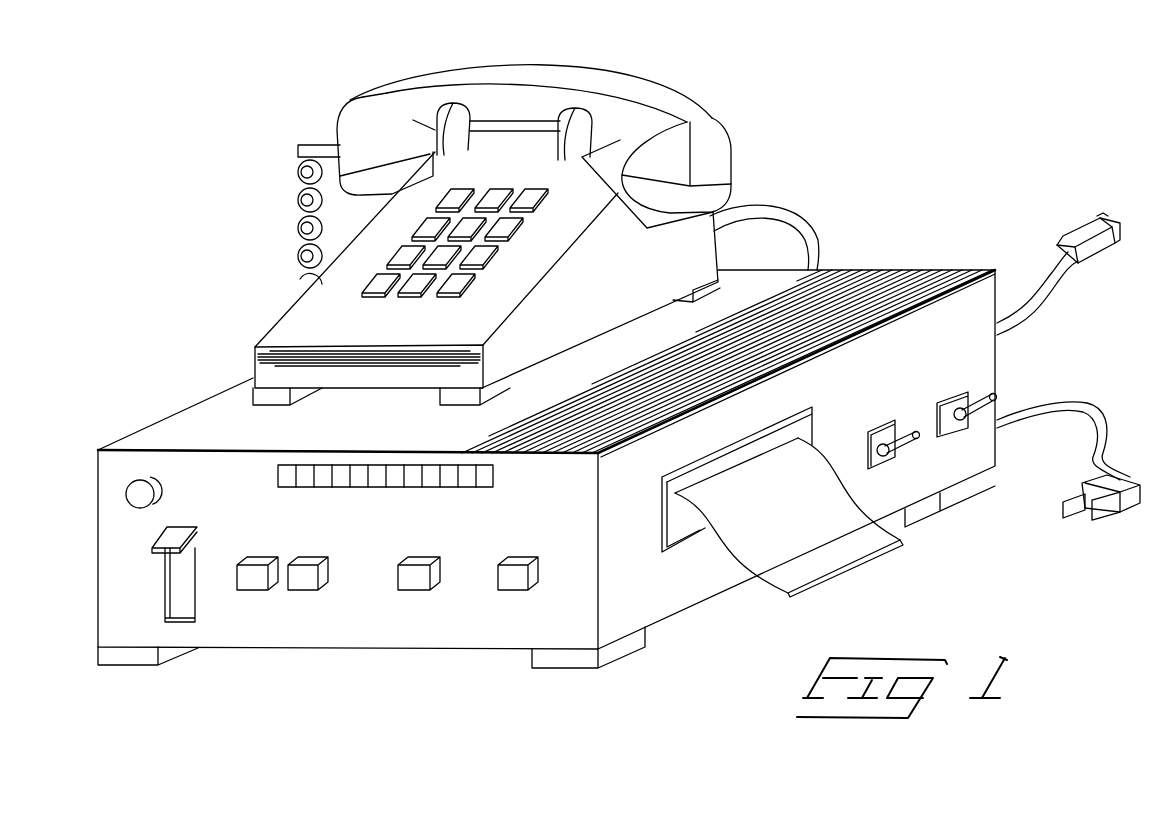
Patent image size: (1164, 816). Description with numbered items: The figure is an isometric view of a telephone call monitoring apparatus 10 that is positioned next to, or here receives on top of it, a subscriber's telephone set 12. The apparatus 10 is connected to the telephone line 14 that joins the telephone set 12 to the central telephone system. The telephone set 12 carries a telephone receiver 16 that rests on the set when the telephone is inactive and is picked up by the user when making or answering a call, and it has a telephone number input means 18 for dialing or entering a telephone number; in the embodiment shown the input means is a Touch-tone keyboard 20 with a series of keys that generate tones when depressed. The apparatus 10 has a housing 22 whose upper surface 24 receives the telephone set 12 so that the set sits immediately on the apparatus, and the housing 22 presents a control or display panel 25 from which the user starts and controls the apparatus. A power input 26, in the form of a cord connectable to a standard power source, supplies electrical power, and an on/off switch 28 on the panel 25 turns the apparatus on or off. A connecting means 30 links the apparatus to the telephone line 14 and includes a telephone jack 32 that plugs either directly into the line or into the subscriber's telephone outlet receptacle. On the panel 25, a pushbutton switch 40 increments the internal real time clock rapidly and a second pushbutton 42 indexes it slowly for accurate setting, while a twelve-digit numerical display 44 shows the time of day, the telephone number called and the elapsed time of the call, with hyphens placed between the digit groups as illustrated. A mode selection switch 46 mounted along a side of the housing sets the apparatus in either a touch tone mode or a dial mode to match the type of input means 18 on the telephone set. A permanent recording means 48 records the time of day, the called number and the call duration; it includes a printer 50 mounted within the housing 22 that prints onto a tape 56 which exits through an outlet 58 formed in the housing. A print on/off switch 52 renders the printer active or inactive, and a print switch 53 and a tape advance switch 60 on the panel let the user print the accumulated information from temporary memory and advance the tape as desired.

The telephone call monitoring apparatus 10 is at (938, 250).
The telephone set 12 is at (627, 287).
The telephone line 14 is at (792, 213).
The telephone receiver 16 is at (608, 84).
The telephone number input means 18 is at (505, 182).
The Touch-tone keyboard 20 is at (500, 258).
The housing 22 is at (203, 405).
The surface 24 is at (675, 371).
The control or display panel 25 is at (112, 507).
The power input 26 is at (1092, 405).
The on/off switch 28 is at (180, 526).
The connecting means 30 is at (1038, 294).
The telephone jack 32 is at (1108, 246).
The pushbutton switch 40 is at (238, 575).
The pushbutton 42 is at (318, 578).
The numerical display 44 is at (382, 488).
The mode selection switch 46 is at (994, 388).
The permanent recording means 48 is at (752, 432).
The printer 50 is at (703, 466).
The print on/off switch 52 is at (887, 462).
The print switch 53 is at (441, 582).
The tape 56 is at (820, 578).
The outlet 58 is at (727, 466).
The tape advance switch 60 is at (539, 580).